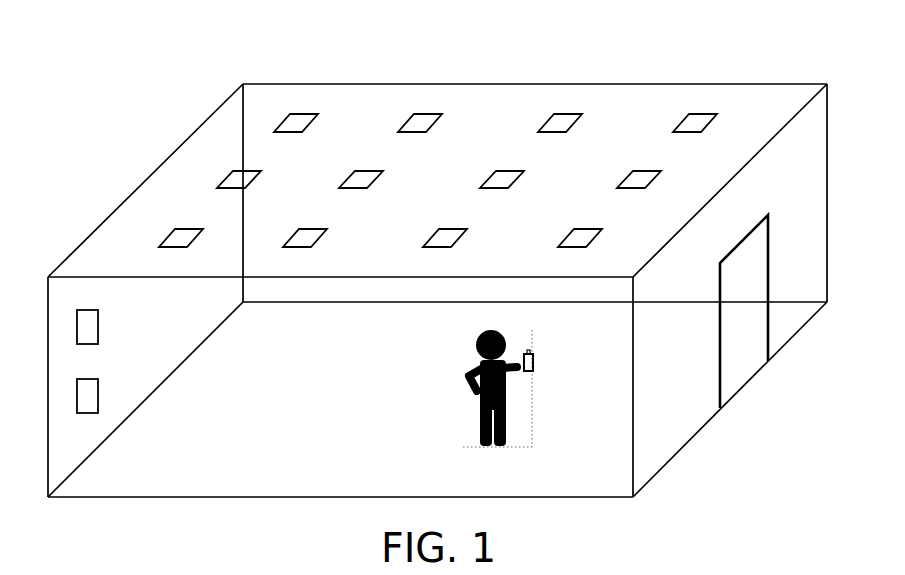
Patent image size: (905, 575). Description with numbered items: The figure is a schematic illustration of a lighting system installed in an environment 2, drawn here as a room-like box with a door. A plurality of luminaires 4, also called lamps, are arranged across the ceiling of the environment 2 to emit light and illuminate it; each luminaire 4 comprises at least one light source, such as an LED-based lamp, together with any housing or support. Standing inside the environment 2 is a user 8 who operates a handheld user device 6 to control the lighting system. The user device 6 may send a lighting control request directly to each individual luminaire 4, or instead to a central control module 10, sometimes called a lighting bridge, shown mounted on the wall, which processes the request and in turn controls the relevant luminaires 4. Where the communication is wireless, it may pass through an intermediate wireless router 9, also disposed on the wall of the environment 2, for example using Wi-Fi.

The environment 2 is at (675, 84).
The luminaires 4 is at (568, 119).
The user device 6 is at (533, 361).
The user 8 is at (480, 407).
The wireless router 9 is at (98, 387).
The central control module 10 is at (98, 318).